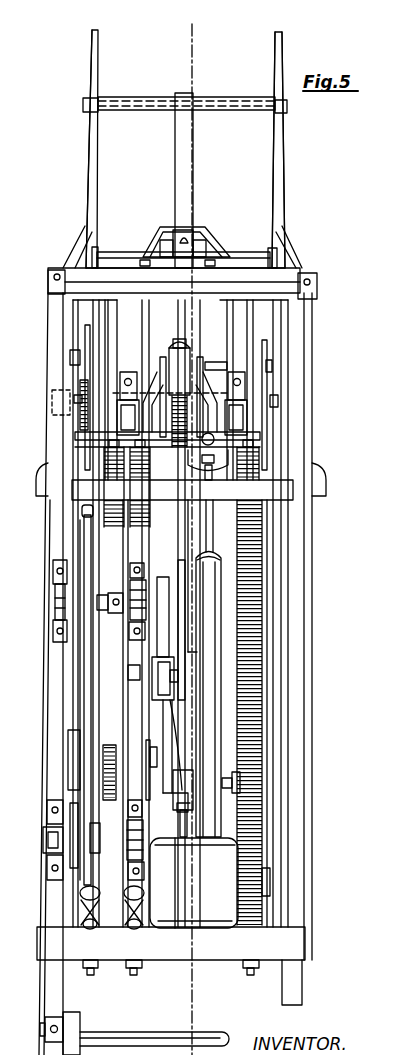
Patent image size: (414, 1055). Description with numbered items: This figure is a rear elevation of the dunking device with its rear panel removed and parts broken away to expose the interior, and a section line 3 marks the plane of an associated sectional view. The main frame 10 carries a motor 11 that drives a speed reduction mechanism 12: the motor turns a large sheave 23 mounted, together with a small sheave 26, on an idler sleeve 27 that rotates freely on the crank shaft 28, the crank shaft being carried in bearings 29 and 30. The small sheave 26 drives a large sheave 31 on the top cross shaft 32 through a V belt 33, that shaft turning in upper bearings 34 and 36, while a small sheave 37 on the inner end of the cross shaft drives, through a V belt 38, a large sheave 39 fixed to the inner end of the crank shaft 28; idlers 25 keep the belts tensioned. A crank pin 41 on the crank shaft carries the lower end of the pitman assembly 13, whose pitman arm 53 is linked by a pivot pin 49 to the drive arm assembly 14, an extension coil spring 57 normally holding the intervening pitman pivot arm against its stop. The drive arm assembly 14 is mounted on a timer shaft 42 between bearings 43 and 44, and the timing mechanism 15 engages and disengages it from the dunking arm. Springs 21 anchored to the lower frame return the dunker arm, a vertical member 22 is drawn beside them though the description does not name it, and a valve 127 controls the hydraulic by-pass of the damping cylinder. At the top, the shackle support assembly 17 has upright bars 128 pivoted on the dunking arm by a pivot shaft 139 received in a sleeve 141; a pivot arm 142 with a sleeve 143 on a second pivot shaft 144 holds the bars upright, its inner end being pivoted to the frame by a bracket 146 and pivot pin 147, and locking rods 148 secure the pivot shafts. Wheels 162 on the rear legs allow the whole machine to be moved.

The section line 3- 3 is at (192, 24).
The main frame 10 is at (297, 781).
The motor 11 is at (268, 890).
The speed reduction mechanism 12 is at (78, 620).
The pitman assembly 13 is at (187, 695).
The drive arm assembly 14 is at (215, 367).
The timing mechanism 15 is at (75, 437).
The shackle support assembly 17 is at (272, 160).
The springs 21 is at (258, 607).
The cylinder 22 is at (222, 585).
The large sheave 23 is at (108, 745).
The idlers 25 is at (155, 660).
The small sheave 26 is at (77, 855).
The idler sleeve 27 is at (62, 855).
The crank shaft 28 is at (43, 845).
The bearing 29 is at (55, 800).
The bearing 30 is at (135, 800).
The large sheave 31 is at (80, 530).
The top cross shaft 32 is at (107, 592).
The V belt 33 is at (82, 690).
The upper bearing 34 is at (53, 570).
The upper bearing 36 is at (137, 562).
The small sheave 37 is at (162, 576).
The V belt 38 is at (158, 715).
The large sheave 39 is at (152, 748).
The crank pin 41 is at (192, 815).
The timer shaft 42 is at (158, 428).
The bearing 43 is at (128, 372).
The bearing 44 is at (246, 386).
The pivot pin 49 is at (192, 365).
The pitman arm 53 is at (183, 725).
The extension coil spring 57 is at (165, 392).
The valve 127 is at (258, 757).
The upright bars 128 is at (97, 187).
The pivot shaft 139 is at (300, 270).
The sleeve 141 is at (235, 257).
The pivot arm 142 is at (176, 139).
The sleeve 143 is at (163, 80).
The second pivot shaft 144 is at (288, 108).
The bracket 146 is at (172, 228).
The pivot pin 147 is at (163, 240).
The locking rods 148 is at (88, 165).
The wheels 162 is at (75, 1025).